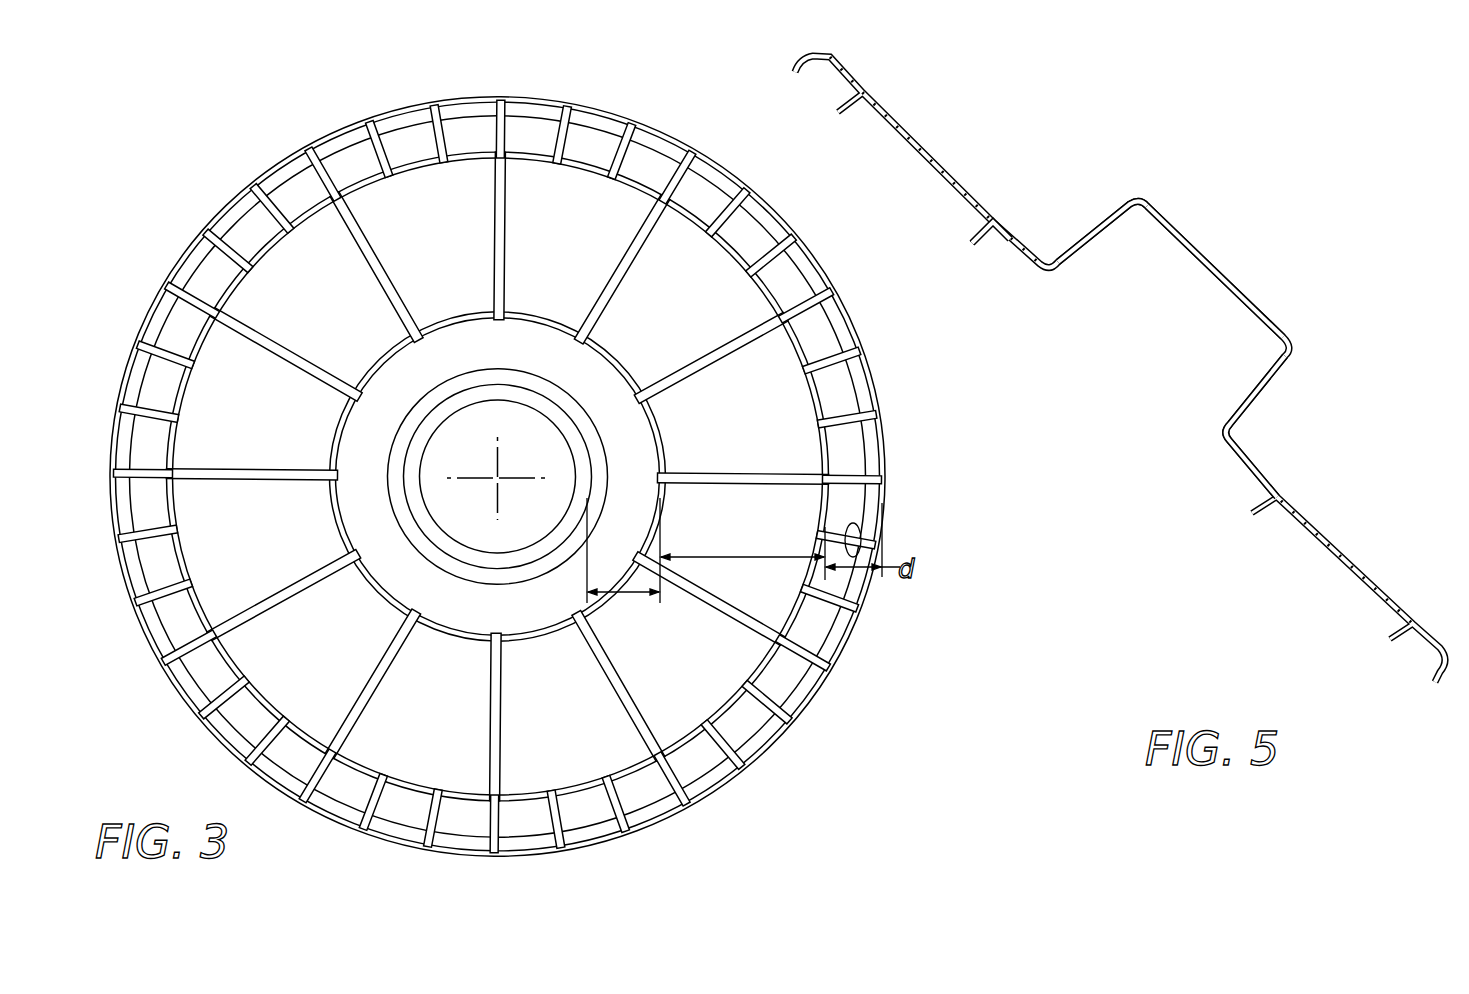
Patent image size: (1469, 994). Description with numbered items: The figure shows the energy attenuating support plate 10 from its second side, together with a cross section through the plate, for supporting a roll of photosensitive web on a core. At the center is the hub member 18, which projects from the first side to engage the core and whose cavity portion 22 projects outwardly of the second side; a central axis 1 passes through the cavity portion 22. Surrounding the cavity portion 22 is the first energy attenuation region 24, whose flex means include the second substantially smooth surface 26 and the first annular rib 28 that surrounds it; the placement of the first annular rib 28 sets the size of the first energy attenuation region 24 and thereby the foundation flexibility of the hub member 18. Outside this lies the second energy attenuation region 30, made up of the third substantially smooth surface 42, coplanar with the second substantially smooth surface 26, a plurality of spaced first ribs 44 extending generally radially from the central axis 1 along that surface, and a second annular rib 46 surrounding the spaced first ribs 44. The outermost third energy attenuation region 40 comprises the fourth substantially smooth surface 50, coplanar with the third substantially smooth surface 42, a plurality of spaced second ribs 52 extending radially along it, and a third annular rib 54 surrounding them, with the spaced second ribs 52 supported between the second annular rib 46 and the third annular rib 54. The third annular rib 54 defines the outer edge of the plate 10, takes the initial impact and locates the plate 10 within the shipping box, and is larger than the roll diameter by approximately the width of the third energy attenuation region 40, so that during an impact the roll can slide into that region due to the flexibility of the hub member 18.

In FIG. 3, the central axis 1 is at (486, 474).
In FIG. 3, the energy attenuating support plate 10 is at (220, 181).
In FIG. 5, the energy attenuating support plate 10 is at (1213, 547).
In FIG. 3, the hub member 18 is at (543, 454).
In FIG. 5, the hub member 18 is at (1100, 227).
In FIG. 3, the cavity portion 22 is at (471, 550).
In FIG. 5, the cavity portion 22 is at (1194, 327).
In FIG. 3, the first energy attenuation region 24 is at (640, 595).
In FIG. 5, the first energy attenuation region 24 is at (968, 253).
In FIG. 3, the second substantially smooth surface 26 is at (477, 619).
In FIG. 5, the second substantially smooth surface 26 is at (1213, 458).
In FIG. 3, the first annular rib 28 is at (364, 598).
In FIG. 5, the first annular rib 28 is at (956, 245).
In FIG. 3, the second energy attenuation region 30 is at (732, 558).
In FIG. 3, the third energy attenuation region 40 is at (858, 528).
In FIG. 3, the third substantially smooth surface 42 is at (757, 437).
In FIG. 3, the spaced first ribs 44 is at (280, 376).
In FIG. 3, the second annular rib 46 is at (155, 502).
In FIG. 3, the fourth substantially smooth surface 50 is at (842, 397).
In FIG. 3, the spaced second ribs 52 is at (172, 357).
In FIG. 3, the third annular rib 54 is at (112, 415).